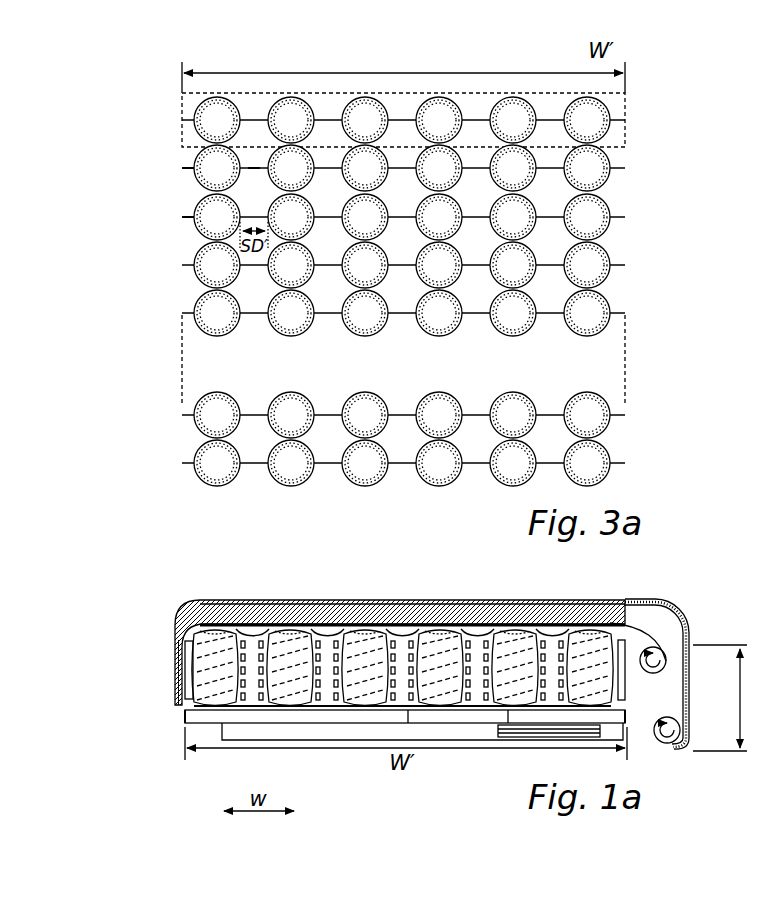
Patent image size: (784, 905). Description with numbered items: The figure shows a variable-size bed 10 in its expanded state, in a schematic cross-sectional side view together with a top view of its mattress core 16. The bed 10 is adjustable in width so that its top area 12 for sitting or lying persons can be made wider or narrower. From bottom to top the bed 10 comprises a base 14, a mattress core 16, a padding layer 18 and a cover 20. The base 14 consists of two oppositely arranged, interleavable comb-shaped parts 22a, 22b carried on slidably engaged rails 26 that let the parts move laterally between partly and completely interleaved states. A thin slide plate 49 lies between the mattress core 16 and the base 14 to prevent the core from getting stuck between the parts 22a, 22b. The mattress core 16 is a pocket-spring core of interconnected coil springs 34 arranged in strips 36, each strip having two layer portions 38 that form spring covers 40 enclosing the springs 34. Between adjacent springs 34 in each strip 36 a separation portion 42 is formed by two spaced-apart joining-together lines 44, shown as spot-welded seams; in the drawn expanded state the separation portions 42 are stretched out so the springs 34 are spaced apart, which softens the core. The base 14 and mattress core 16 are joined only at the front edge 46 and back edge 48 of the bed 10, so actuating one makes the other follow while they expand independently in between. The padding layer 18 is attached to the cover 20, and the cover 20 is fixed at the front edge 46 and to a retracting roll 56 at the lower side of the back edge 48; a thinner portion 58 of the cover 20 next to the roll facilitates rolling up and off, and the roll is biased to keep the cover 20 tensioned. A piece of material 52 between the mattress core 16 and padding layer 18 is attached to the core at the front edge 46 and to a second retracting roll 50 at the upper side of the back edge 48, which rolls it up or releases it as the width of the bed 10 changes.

In FIG. 1A, the bed 10 is at (156, 537).
In FIG. 1A, the top area 12 is at (406, 585).
In FIG. 1A, the base 14 is at (170, 718).
In FIG. 3A, the mattress core 16 is at (150, 202).
In FIG. 1A, the mattress core 16 is at (186, 667).
In FIG. 1A, the padding layer 18 is at (178, 627).
In FIG. 1A, the cover 20 is at (187, 615).
In FIG. 1A, the comb-shaped part 22a is at (203, 717).
In FIG. 1A, the comb-shaped part 22b is at (627, 718).
In FIG. 1A, the rail 26 is at (332, 733).
In FIG. 3A, the coil spring 34 is at (197, 232).
In FIG. 1A, the coil spring 34 is at (196, 657).
In FIG. 3A, the strip 36 is at (178, 129).
In FIG. 3A, the layer portion 38 is at (190, 183).
In FIG. 3A, the spring cover 40 is at (197, 226).
In FIG. 1A, the spring cover 40 is at (198, 688).
In FIG. 3A, the separation portion 42 is at (254, 166).
In FIG. 1A, the separation portion 42 is at (253, 655).
In FIG. 3A, the joining-together line 44 is at (257, 172).
In FIG. 1A, the joining-together line 44 is at (245, 699).
In FIG. 1A, the front edge 46 is at (185, 585).
In FIG. 1A, the back edge 48 is at (631, 582).
In FIG. 1A, the slide plate 49 is at (437, 712).
In FIG. 1A, the retracting roll 50 is at (668, 657).
In FIG. 1A, the piece of material 52 is at (645, 632).
In FIG. 1A, the retracting roll 56 is at (682, 733).
In FIG. 1A, the thinner portion of the cover 58 is at (690, 692).